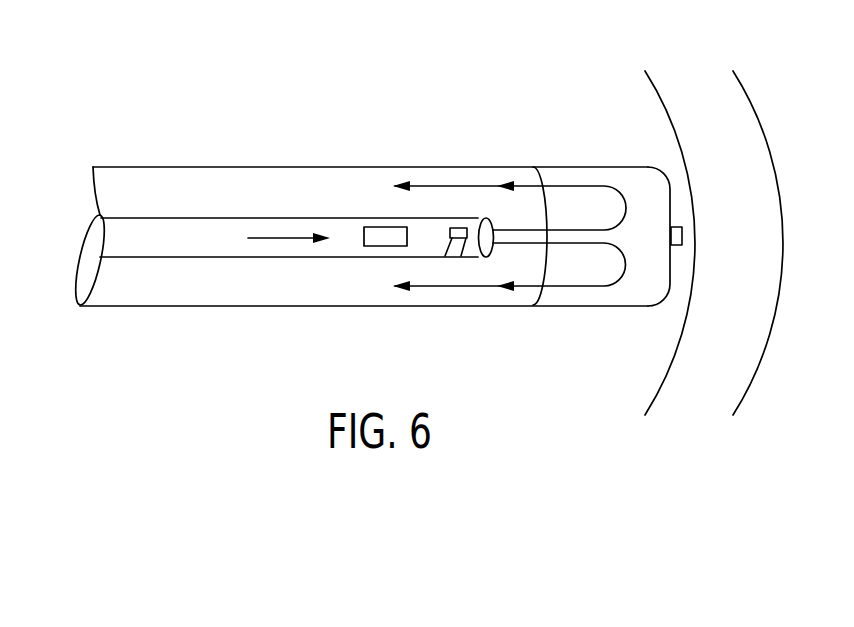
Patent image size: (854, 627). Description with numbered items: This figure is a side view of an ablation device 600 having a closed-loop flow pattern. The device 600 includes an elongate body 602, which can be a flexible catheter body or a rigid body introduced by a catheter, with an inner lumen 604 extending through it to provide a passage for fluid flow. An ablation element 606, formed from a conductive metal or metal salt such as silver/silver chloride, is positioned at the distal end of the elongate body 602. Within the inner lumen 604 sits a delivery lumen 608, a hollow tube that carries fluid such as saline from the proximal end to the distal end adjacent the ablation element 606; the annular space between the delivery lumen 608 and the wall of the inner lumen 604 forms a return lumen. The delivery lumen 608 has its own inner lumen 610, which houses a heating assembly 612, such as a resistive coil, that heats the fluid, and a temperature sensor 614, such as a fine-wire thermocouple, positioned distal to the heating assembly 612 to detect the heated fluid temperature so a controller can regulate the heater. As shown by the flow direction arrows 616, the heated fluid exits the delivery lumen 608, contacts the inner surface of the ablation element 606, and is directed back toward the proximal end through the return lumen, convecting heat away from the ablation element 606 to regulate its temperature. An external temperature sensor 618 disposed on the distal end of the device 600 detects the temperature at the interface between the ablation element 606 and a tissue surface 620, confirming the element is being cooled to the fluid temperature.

The ablation device 600 is at (150, 80).
The elongate body 602 is at (167, 180).
The inner lumen 604 is at (115, 275).
The ablation element 606 is at (612, 178).
The delivery lumen 608 is at (242, 217).
The inner lumen of the delivery lumen 610 is at (115, 240).
The heating assembly 612 is at (385, 246).
The temperature sensor 614 is at (463, 228).
The flow direction arrows 616 is at (520, 288).
The external temperature sensor 618 is at (677, 246).
The tissue surface 620 is at (760, 298).